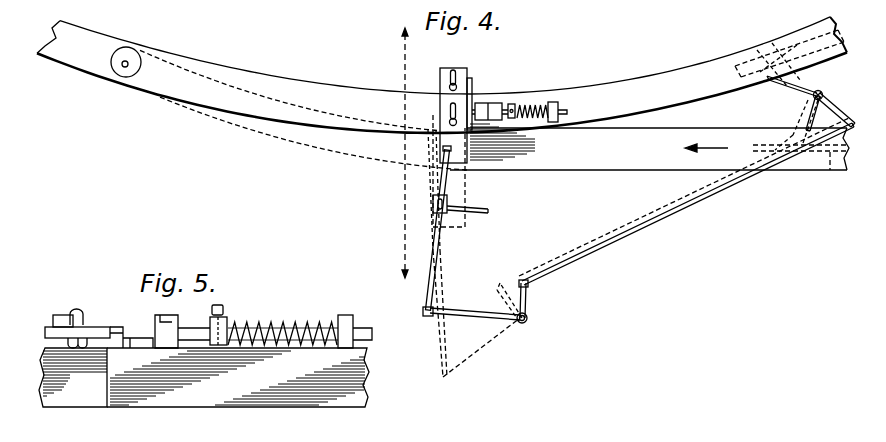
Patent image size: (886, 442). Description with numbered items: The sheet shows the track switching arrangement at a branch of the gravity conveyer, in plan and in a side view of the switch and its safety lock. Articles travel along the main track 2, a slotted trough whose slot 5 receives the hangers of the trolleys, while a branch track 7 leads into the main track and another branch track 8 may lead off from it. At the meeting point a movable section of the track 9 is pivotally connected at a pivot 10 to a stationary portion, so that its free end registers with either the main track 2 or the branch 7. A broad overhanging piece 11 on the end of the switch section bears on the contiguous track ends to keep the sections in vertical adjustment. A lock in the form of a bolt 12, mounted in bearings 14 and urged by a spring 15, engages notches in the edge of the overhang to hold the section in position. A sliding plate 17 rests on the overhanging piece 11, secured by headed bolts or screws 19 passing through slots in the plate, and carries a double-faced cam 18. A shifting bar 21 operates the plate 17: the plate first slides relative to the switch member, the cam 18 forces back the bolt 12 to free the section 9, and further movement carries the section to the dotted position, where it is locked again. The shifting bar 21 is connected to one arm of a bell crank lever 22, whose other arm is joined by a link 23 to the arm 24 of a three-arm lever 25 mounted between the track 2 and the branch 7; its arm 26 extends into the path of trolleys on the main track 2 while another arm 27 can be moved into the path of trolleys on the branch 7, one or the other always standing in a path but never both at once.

In FIG. 4, the track 2 is at (442, 93).
In FIG. 4, the slot 5 is at (830, 170).
In FIG. 4, the branch track 7 is at (649, 149).
In FIG. 5, the branch track 7 is at (238, 377).
In FIG. 4, the branch track 8 is at (803, 50).
In FIG. 4, the movable section of the track 9 is at (361, 107).
In FIG. 5, the movable section of the track 9 is at (73, 377).
In FIG. 4, the pivot 10 is at (121, 78).
In FIG. 5, the overhanging piece 11 is at (118, 340).
In FIG. 4, the bolt 12 is at (507, 102).
In FIG. 5, the bolt 12 is at (190, 328).
In FIG. 4, the bearings 14 is at (555, 123).
In FIG. 5, the bearings 14 is at (347, 315).
In FIG. 4, the spring 15 is at (538, 108).
In FIG. 5, the spring 15 is at (296, 326).
In FIG. 4, the sliding plate 17 is at (446, 118).
In FIG. 5, the sliding plate 17 is at (44, 326).
In FIG. 4, the double-faced cam 18 is at (472, 95).
In FIG. 5, the double-faced cam 18 is at (113, 326).
In FIG. 5, the headed bolts or screws 19 is at (80, 311).
In FIG. 4, the shifting bar 21 is at (440, 243).
In FIG. 5, the shifting bar 21 is at (62, 315).
In FIG. 4, the bell crank lever 22 is at (482, 312).
In FIG. 4, the link 23 is at (630, 233).
In FIG. 4, the arm 24 is at (836, 108).
In FIG. 4, the three-arm lever 25 is at (827, 85).
In FIG. 4, the arm 26 is at (787, 82).
In FIG. 4, the arm 27 is at (809, 123).